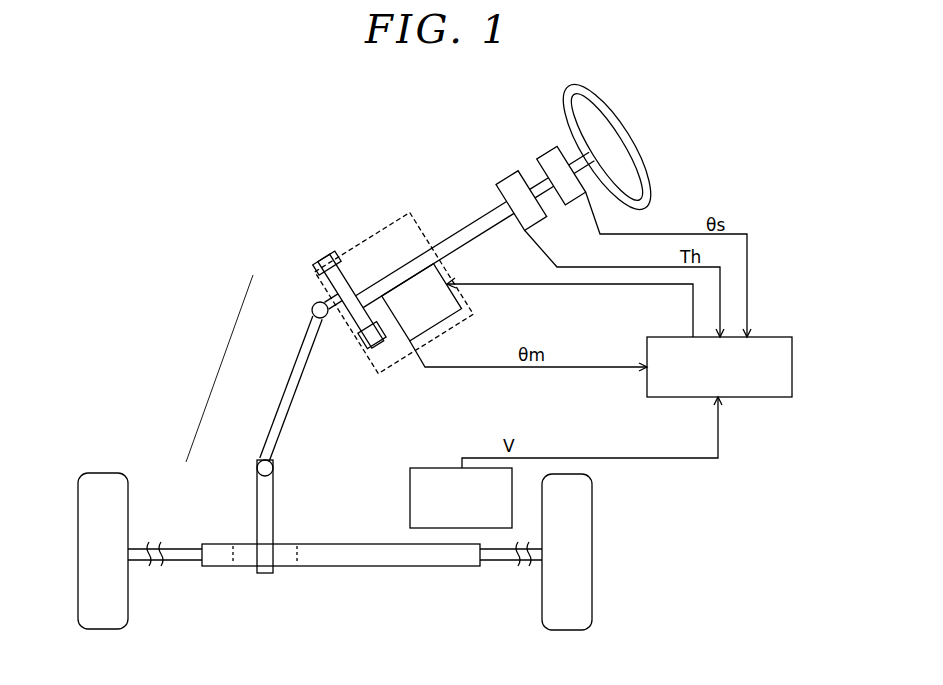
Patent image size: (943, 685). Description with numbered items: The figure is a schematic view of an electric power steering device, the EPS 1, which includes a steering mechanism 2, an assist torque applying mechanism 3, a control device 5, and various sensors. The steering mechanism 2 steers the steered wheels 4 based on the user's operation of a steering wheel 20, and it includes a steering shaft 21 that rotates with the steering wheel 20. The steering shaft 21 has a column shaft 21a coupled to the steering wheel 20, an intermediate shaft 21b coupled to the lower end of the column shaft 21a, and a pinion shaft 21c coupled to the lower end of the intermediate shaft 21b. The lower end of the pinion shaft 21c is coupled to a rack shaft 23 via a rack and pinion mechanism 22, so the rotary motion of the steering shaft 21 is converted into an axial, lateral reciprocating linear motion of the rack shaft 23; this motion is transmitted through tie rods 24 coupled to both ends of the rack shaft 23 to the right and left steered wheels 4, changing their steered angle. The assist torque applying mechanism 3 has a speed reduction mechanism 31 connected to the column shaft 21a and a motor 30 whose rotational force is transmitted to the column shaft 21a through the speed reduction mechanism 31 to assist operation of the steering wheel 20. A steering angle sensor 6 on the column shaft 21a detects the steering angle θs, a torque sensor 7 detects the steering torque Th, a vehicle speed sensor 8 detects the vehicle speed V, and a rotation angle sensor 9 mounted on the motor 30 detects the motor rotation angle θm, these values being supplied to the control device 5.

The EPS 1 is at (230, 168).
The steering mechanism 2 is at (172, 318).
The assist torque applying mechanism 3 is at (389, 222).
The steered wheels 4 is at (78, 553).
The control device 5 is at (792, 367).
The steering angle sensor 6 is at (545, 149).
The torque sensor 7 is at (501, 175).
The vehicle speed sensor 8 is at (434, 467).
The rotation angle sensor 9 is at (408, 344).
The steering wheel 20 is at (628, 127).
The steering shaft 21 is at (219, 367).
The column shaft 21a is at (312, 306).
The intermediate shaft 21b is at (285, 393).
The pinion shaft 21c is at (257, 492).
The rack and pinion mechanism 22 is at (297, 561).
The rack shaft 23 is at (361, 567).
The tie rods 24 is at (181, 566).
The motor 30 is at (469, 307).
The speed reduction mechanism 31 is at (360, 333).